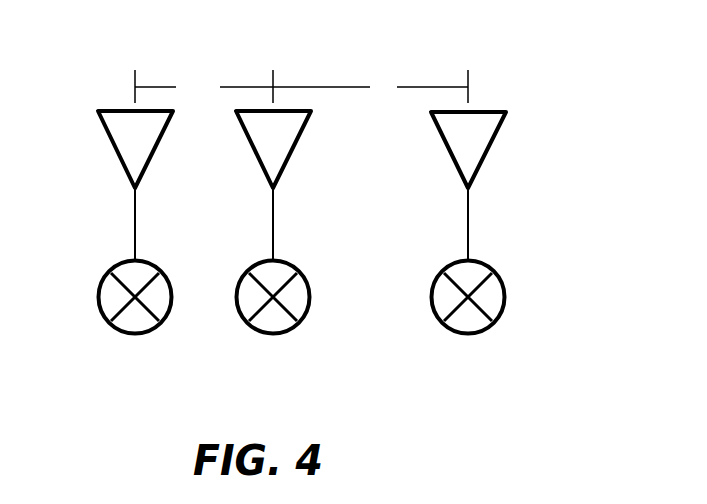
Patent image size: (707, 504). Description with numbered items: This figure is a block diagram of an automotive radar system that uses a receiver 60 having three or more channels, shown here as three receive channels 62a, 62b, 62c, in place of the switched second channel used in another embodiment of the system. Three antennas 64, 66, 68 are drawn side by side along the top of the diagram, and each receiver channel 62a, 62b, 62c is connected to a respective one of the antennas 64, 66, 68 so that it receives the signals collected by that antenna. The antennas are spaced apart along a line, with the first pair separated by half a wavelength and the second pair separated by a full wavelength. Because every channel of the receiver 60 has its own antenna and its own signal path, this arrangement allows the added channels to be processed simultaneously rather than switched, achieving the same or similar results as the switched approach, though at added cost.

The receiver 60 is at (537, 92).
The antenna 64 is at (111, 140).
The antenna 66 is at (264, 170).
The antenna 68 is at (458, 170).
The receiver channel 62a is at (98, 297).
The receiver channel 62b is at (310, 297).
The receiver channel 62c is at (505, 297).